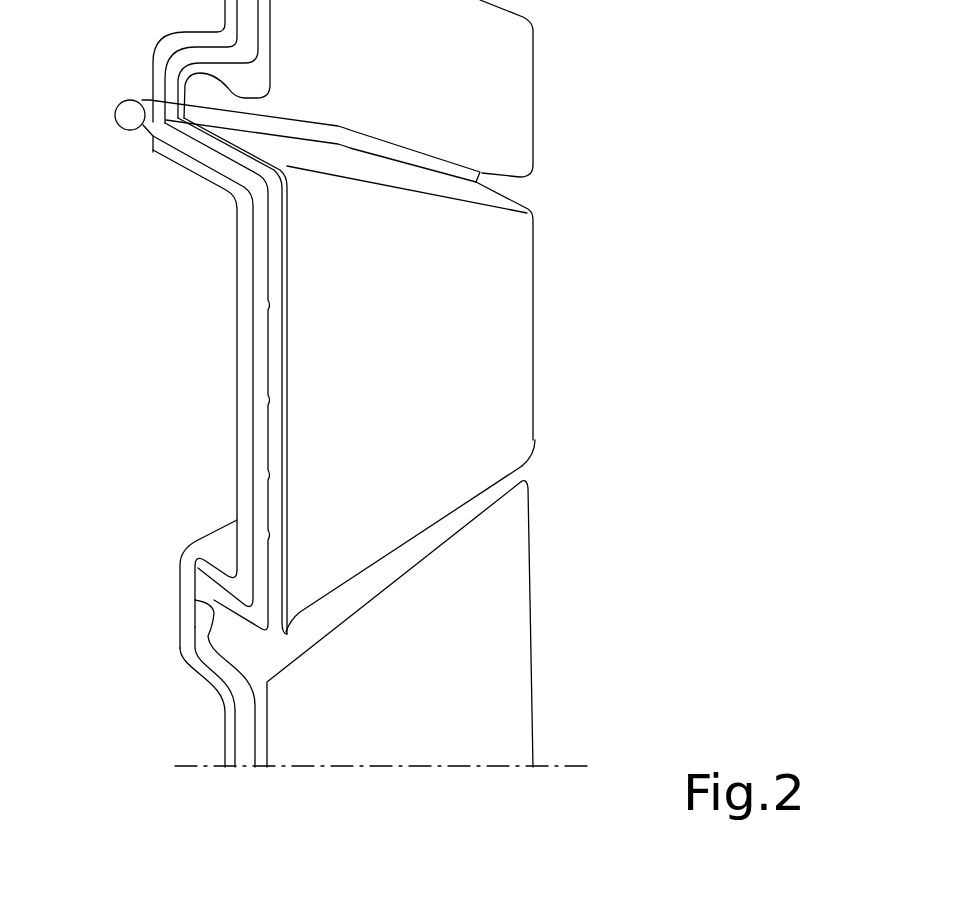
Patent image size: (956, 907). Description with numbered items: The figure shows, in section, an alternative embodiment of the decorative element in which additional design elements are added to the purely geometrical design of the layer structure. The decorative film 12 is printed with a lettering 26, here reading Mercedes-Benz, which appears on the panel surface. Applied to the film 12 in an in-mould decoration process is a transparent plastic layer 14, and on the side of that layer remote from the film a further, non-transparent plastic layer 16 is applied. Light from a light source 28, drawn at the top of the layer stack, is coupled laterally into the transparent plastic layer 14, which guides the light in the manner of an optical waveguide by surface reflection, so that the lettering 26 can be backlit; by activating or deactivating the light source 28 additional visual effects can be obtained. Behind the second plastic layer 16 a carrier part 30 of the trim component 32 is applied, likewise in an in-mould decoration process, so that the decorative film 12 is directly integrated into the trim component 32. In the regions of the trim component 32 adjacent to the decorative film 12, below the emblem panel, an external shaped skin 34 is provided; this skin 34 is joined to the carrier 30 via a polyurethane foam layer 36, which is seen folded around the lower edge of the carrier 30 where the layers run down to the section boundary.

The film 12 is at (513, 255).
The transparent plastic layer 14 is at (273, 449).
The further plastic layer 16 is at (260, 374).
The lettering 26 is at (480, 305).
The light source 28 is at (127, 118).
The carrier part 30 is at (243, 303).
The trim component 32 is at (563, 656).
The external shaped skin 34 is at (518, 598).
The polyurethane foam layer 36 is at (245, 722).